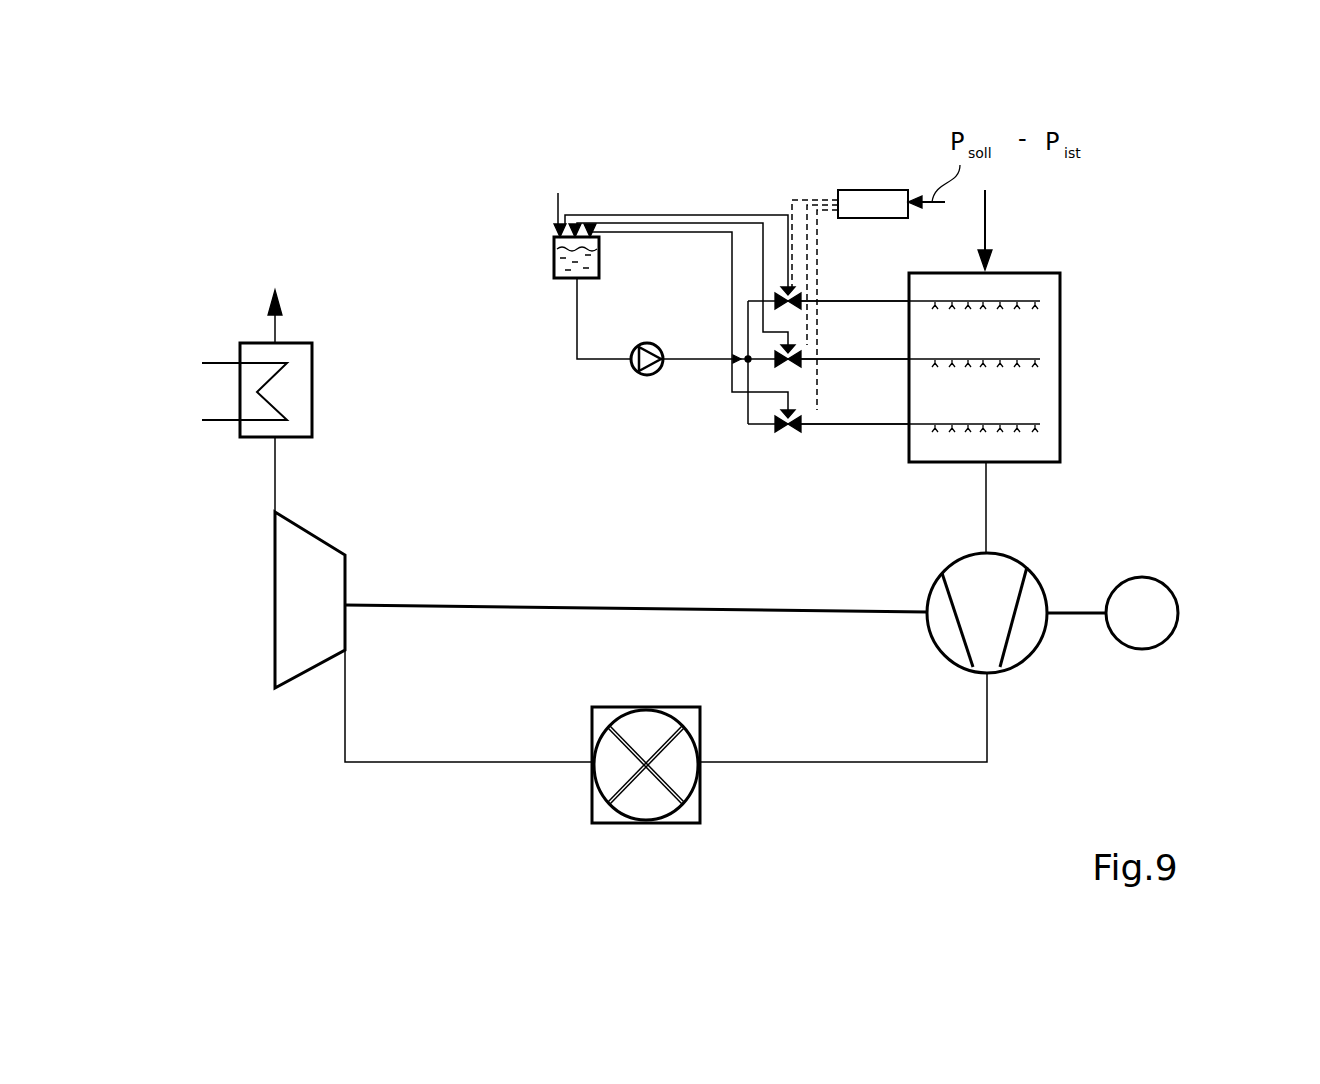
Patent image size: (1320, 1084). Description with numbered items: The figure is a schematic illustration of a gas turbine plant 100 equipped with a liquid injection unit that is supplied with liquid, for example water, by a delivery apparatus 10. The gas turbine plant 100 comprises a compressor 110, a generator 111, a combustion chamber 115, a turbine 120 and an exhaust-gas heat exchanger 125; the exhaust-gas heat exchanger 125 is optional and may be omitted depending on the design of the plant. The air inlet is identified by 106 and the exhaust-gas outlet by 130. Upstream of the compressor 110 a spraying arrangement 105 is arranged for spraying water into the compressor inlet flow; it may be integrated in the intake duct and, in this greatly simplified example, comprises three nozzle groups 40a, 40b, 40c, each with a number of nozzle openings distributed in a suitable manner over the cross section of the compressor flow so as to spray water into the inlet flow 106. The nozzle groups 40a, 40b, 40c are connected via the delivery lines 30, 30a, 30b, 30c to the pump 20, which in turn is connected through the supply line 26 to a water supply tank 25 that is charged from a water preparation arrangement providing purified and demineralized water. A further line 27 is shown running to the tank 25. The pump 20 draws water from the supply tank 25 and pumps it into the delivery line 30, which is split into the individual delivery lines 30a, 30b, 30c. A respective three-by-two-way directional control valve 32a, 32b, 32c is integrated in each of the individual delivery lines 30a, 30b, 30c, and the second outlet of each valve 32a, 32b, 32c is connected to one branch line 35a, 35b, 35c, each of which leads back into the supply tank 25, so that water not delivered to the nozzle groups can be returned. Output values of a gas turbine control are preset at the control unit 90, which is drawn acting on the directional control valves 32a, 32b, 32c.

The gas turbine plant 100 is at (268, 178).
The delivery apparatus 10 is at (625, 142).
The exhaust-gas outlet 130 is at (268, 312).
The exhaust-gas heat exchanger 125 is at (302, 343).
The turbine 120 is at (332, 540).
The combustion chamber 115 is at (652, 823).
The compressor 110 is at (1028, 657).
The generator 111 is at (1178, 617).
The spraying arrangement 105 is at (1033, 273).
The air inlet 106 is at (988, 200).
The control unit 90 is at (870, 190).
The water feed line 27 is at (556, 220).
The water supply tank 25 is at (552, 264).
The supply line 26 is at (572, 323).
The pump 20 is at (645, 376).
The delivery line 30 is at (698, 362).
The individual delivery line 30a is at (885, 426).
The individual delivery line 30b is at (887, 361).
The individual delivery line 30c is at (887, 303).
The 3/2-way directional control valve 32a is at (794, 430).
The 3/2-way directional control valve 32b is at (794, 365).
The 3/2-way directional control valve 32c is at (794, 307).
The branch line 35a is at (660, 215).
The branch line 35b is at (700, 223).
The branch line 35c is at (748, 232).
The nozzle group 40a is at (1040, 424).
The nozzle group 40b is at (1040, 359).
The nozzle group 40c is at (1040, 301).